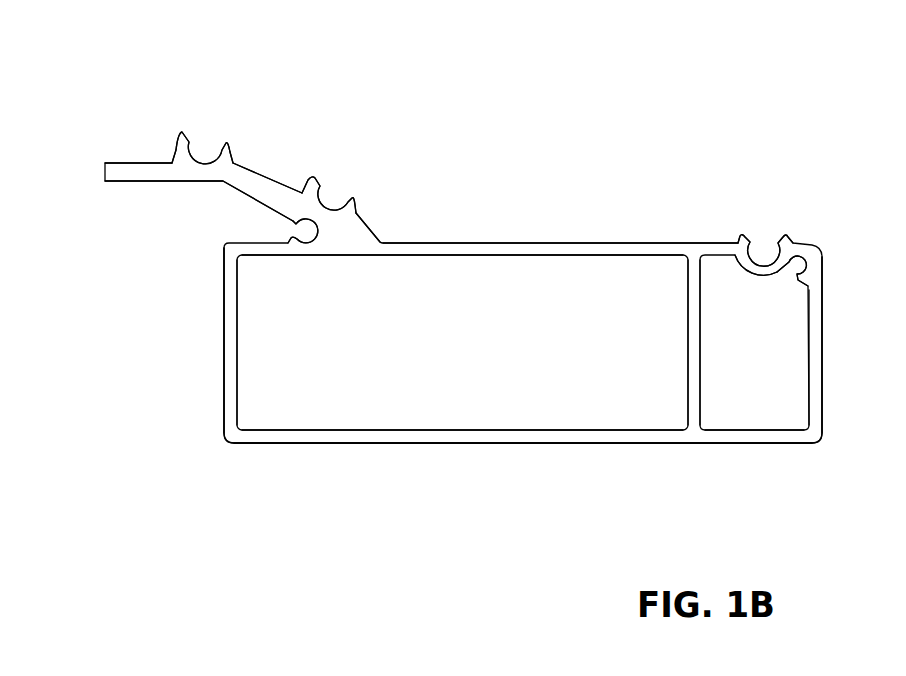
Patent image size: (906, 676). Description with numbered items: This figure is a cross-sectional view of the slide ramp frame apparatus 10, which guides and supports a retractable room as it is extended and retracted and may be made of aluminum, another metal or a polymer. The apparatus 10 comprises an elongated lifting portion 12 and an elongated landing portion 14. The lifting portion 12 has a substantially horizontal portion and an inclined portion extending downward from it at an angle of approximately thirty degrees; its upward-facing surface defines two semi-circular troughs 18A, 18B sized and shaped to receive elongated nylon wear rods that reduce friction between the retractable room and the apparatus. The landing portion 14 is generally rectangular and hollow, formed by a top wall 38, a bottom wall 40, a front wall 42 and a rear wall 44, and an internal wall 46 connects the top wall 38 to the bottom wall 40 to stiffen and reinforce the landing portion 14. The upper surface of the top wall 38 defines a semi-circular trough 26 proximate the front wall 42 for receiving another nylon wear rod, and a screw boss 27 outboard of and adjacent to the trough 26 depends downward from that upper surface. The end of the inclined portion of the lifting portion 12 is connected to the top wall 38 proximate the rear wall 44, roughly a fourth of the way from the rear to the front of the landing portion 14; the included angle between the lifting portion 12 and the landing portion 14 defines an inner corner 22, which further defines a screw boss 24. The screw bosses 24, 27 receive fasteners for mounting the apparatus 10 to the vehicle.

The slide ramp frame apparatus 10 is at (128, 104).
The elongated lifting portion 12 is at (388, 212).
The elongated landing portion 14 is at (823, 457).
The semi-circular trough 18A is at (207, 147).
The semi-circular trough 18B is at (327, 198).
The inner corner 22 is at (238, 189).
The screw boss 24 is at (313, 237).
The semi-circular trough 26 is at (763, 245).
The screw boss 27 is at (802, 263).
The top wall 38 is at (540, 244).
The bottom wall 40 is at (440, 443).
The front wall 42 is at (822, 312).
The rear wall 44 is at (225, 323).
The internal wall 46 is at (690, 332).